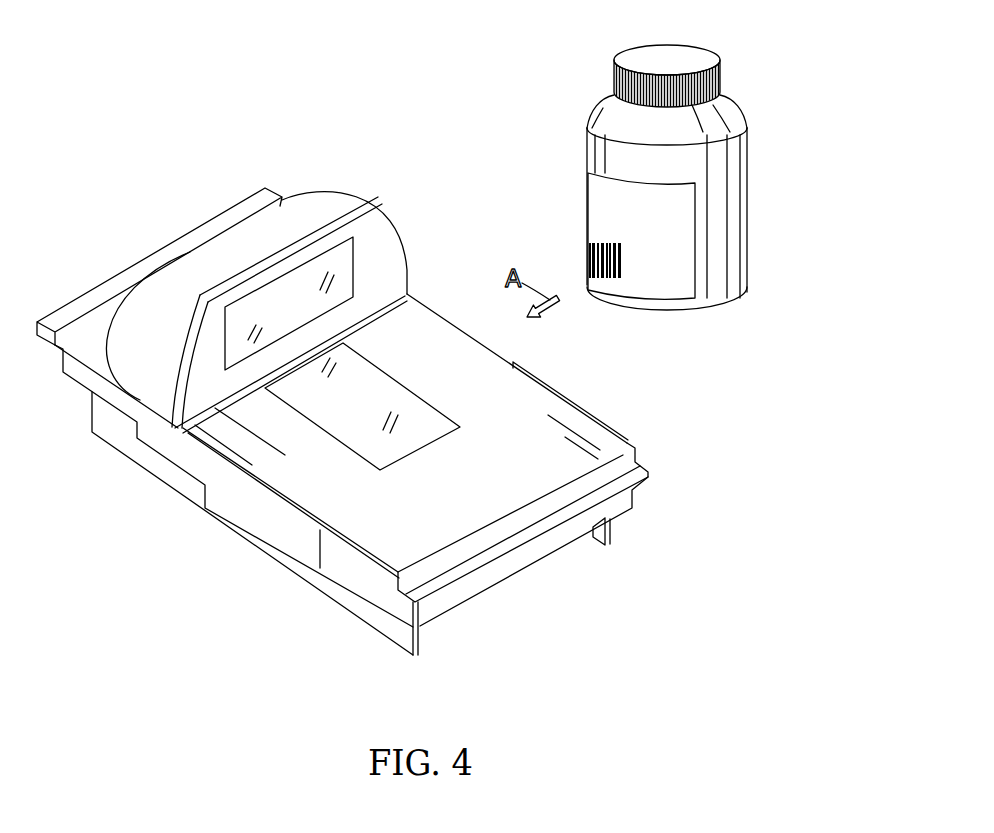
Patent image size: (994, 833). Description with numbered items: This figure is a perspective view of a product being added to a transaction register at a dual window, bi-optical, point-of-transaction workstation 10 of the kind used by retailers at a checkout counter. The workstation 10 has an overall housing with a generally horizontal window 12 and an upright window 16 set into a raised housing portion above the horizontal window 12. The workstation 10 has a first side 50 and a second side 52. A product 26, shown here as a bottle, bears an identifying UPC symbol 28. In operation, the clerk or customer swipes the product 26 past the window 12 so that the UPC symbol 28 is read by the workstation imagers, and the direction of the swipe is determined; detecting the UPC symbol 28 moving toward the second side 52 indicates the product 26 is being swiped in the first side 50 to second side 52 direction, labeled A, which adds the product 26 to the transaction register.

The point-of-transaction workstation 10 is at (173, 575).
The horizontal window 12 is at (363, 463).
The upright window 16 is at (315, 266).
The product 26 is at (743, 51).
The UPC symbol 28 is at (574, 254).
The first side 50 is at (614, 412).
The second side 52 is at (285, 639).